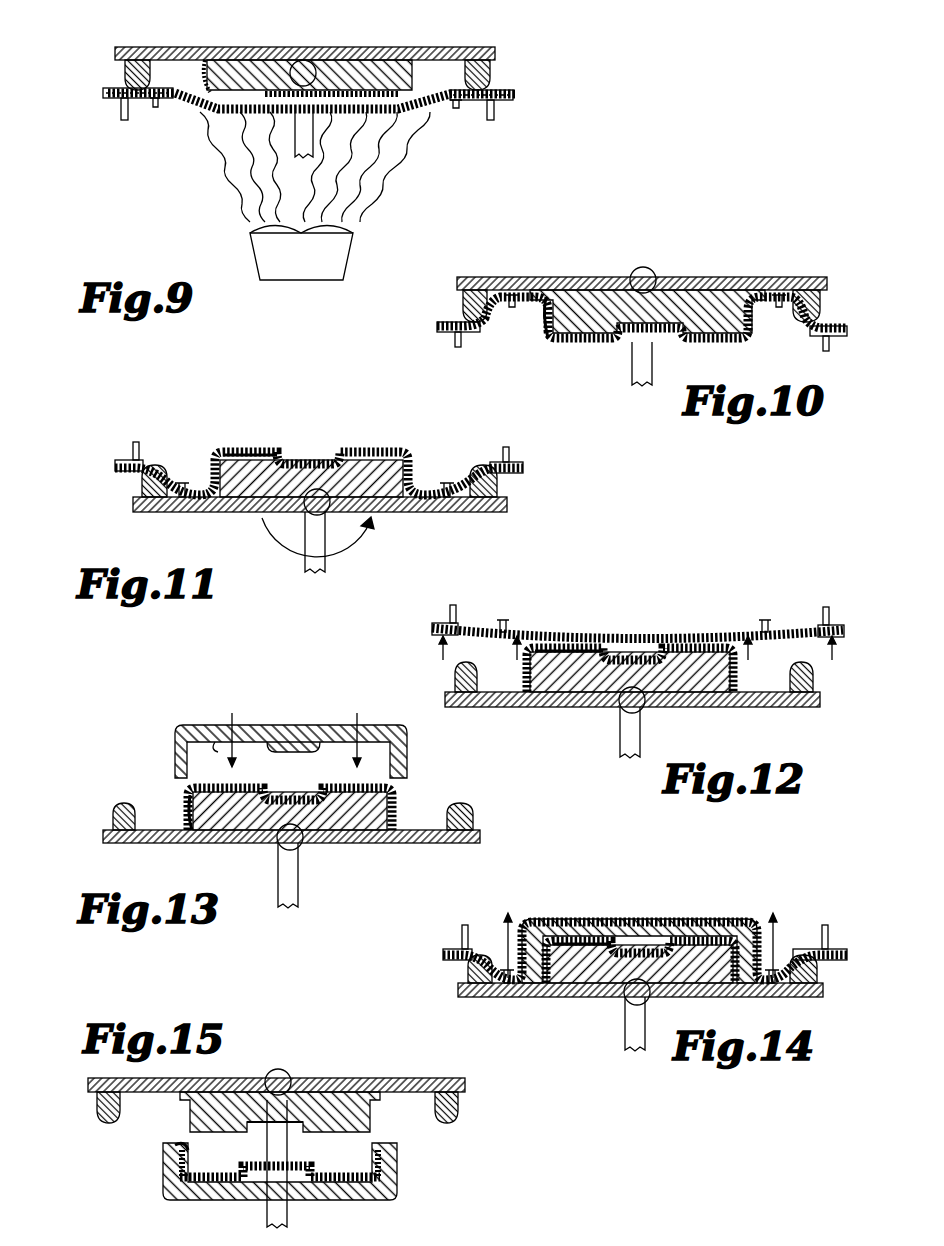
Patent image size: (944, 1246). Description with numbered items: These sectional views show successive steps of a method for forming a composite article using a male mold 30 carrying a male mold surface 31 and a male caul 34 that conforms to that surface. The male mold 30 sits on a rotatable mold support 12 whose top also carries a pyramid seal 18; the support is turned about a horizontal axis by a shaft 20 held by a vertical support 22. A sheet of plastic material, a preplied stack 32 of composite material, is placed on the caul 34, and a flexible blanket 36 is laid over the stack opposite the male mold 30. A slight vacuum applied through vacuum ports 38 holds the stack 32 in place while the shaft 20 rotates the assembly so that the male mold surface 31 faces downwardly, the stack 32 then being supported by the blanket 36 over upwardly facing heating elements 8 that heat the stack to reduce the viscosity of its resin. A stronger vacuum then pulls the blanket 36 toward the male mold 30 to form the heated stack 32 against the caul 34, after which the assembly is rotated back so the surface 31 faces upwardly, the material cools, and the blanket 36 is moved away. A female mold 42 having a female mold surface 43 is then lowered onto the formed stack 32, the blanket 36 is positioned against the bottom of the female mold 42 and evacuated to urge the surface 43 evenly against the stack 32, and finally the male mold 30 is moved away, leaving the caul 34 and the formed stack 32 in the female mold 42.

In FIG. 9, the heating elements 8 is at (353, 255).
In FIG. 9, the mold support 12 is at (205, 50).
In FIG. 10, the mold support 12 is at (505, 277).
In FIG. 11, the mold support 12 is at (183, 512).
In FIG. 12, the mold support 12 is at (507, 707).
In FIG. 13, the mold support 12 is at (291, 836).
In FIG. 14, the mold support 12 is at (520, 997).
In FIG. 15, the mold support 12 is at (355, 1078).
In FIG. 9, the pyramid seal 18 is at (495, 62).
In FIG. 10, the pyramid seal 18 is at (460, 300).
In FIG. 11, the pyramid seal 18 is at (142, 485).
In FIG. 12, the pyramid seal 18 is at (455, 675).
In FIG. 13, the pyramid seal 18 is at (473, 815).
In FIG. 14, the pyramid seal 18 is at (468, 970).
In FIG. 15, the pyramid seal 18 is at (105, 1123).
In FIG. 9, the shaft 20 is at (307, 48).
In FIG. 10, the shaft 20 is at (648, 270).
In FIG. 11, the shaft 20 is at (305, 510).
In FIG. 12, the shaft 20 is at (622, 712).
In FIG. 13, the shaft 20 is at (300, 840).
In FIG. 14, the shaft 20 is at (637, 992).
In FIG. 15, the shaft 20 is at (285, 1070).
In FIG. 9, the vertical support 22 is at (347, 47).
In FIG. 10, the vertical support 22 is at (637, 375).
In FIG. 11, the vertical support 22 is at (303, 568).
In FIG. 12, the vertical support 22 is at (620, 745).
In FIG. 13, the vertical support 22 is at (303, 900).
In FIG. 14, the vertical support 22 is at (625, 1035).
In FIG. 15, the vertical support 22 is at (295, 1218).
In FIG. 9, the male mold 30 is at (393, 68).
In FIG. 10, the male mold 30 is at (700, 300).
In FIG. 11, the male mold 30 is at (305, 480).
In FIG. 12, the male mold 30 is at (690, 660).
In FIG. 13, the male mold 30 is at (365, 815).
In FIG. 14, the male mold 30 is at (700, 955).
In FIG. 15, the male mold 30 is at (365, 1115).
In FIG. 15, the male mold surface 31 is at (320, 1132).
In FIG. 9, the preplied stack 32 is at (180, 100).
In FIG. 10, the preplied stack 32 is at (560, 345).
In FIG. 11, the preplied stack 32 is at (250, 447).
In FIG. 12, the preplied stack 32 is at (565, 647).
In FIG. 13, the preplied stack 32 is at (290, 790).
In FIG. 14, the preplied stack 32 is at (600, 985).
In FIG. 15, the preplied stack 32 is at (385, 1172).
In FIG. 9, the male caul 34 is at (212, 70).
In FIG. 10, the male caul 34 is at (560, 305).
In FIG. 11, the male caul 34 is at (280, 465).
In FIG. 12, the male caul 34 is at (565, 660).
In FIG. 13, the male caul 34 is at (185, 808).
In FIG. 14, the male caul 34 is at (615, 955).
In FIG. 15, the male caul 34 is at (180, 1155).
In FIG. 9, the flexible blanket 36 is at (433, 110).
In FIG. 10, the flexible blanket 36 is at (750, 335).
In FIG. 11, the flexible blanket 36 is at (215, 455).
In FIG. 12, the flexible blanket 36 is at (470, 628).
In FIG. 14, the flexible blanket 36 is at (540, 920).
In FIG. 9, the vacuum ports 38 is at (465, 108).
In FIG. 10, the vacuum ports 38 is at (510, 312).
In FIG. 11, the vacuum ports 38 is at (182, 480).
In FIG. 12, the vacuum ports 38 is at (765, 620).
In FIG. 14, the vacuum ports 38 is at (639, 976).
In FIG. 13, the female mold 42 is at (165, 750).
In FIG. 14, the female mold 42 is at (590, 935).
In FIG. 15, the female mold 42 is at (385, 1190).
In FIG. 13, the female mold surface 43 is at (215, 748).